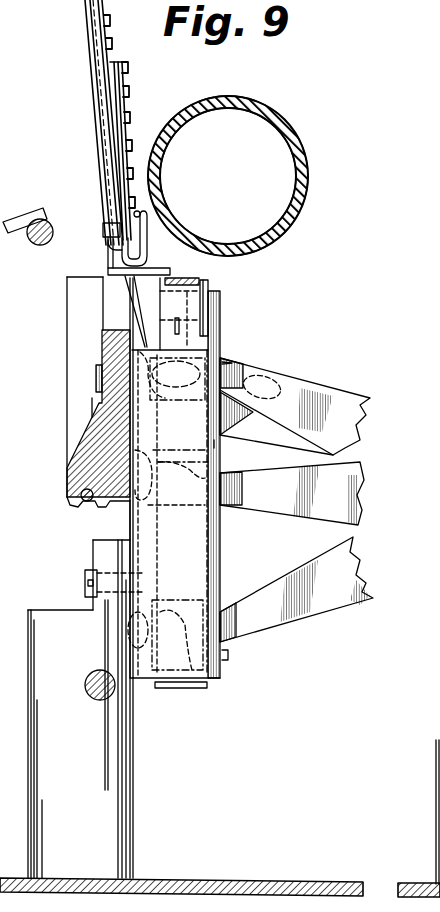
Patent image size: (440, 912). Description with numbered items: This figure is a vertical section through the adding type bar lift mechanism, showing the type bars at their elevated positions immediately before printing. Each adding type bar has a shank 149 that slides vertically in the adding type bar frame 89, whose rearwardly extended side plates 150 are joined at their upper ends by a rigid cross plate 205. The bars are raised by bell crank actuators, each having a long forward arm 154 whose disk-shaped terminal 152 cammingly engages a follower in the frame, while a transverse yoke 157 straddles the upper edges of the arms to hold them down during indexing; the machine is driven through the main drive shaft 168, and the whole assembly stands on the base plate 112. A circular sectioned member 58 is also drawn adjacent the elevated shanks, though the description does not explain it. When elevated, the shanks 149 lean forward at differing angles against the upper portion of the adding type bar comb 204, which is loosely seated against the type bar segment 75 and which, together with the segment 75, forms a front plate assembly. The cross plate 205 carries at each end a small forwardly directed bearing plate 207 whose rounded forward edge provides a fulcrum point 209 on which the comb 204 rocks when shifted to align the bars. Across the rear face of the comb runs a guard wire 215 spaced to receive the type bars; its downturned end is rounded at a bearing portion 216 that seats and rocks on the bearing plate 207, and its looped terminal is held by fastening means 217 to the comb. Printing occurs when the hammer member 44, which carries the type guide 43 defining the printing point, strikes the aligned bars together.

The shank 149 is at (85, 2).
The ring 58 is at (268, 115).
The guard wire 215 is at (140, 212).
The type guide 43 is at (32, 214).
The hammer member 44 is at (36, 242).
The adding type bar comb 204 is at (103, 230).
The rounded bearing portion 216 is at (145, 264).
The fastening means 217 is at (118, 250).
The bearing plate 207 is at (170, 273).
The fulcrum point 209 is at (108, 272).
The cross plate 205 is at (208, 282).
The type bar segment 75 is at (92, 398).
The side plates 150 is at (187, 578).
The transverse yoke 157 is at (217, 311).
The adding type bar frame 89 is at (232, 445).
The disk-shaped terminal 152 is at (228, 356).
The forward arm 154 is at (347, 540).
The main drive shaft 168 is at (86, 685).
The base plate 112 is at (160, 878).